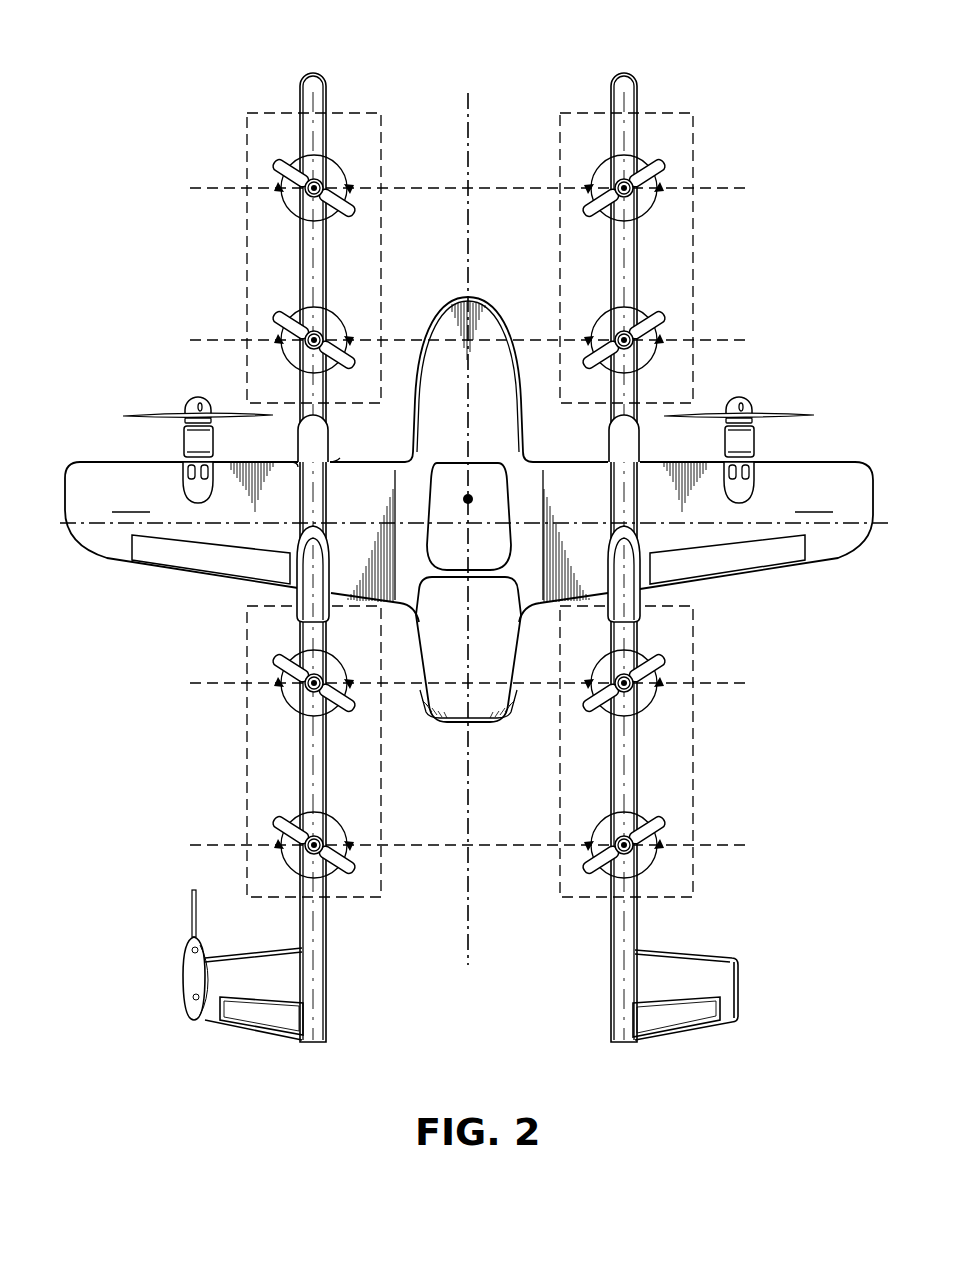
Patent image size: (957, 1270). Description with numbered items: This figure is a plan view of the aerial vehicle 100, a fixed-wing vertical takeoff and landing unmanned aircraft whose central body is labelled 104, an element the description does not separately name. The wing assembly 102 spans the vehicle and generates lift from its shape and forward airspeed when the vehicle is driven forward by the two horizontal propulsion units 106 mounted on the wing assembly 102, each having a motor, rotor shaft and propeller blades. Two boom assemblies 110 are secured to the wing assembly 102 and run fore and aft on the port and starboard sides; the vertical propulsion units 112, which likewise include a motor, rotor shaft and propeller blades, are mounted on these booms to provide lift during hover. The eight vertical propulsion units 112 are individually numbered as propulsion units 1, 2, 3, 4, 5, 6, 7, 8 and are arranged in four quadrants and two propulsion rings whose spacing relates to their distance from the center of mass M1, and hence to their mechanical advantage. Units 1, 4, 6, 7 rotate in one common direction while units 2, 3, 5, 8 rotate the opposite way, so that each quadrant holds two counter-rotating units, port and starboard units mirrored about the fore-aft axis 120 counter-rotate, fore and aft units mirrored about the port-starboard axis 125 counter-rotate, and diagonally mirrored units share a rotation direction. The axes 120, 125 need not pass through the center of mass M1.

The aerial vehicle 100 is at (155, 47).
The wing assembly 102 is at (469, 540).
The fuselage 104 is at (436, 290).
The horizontal propulsion unit 106 is at (182, 388).
The boom assembly 110 is at (312, 98).
The vertical propulsion unit 112 is at (428, 504).
The fore-aft axis 120 is at (471, 252).
The port-starboard axis 125 is at (103, 522).
The center of mass M1 is at (472, 503).
The propulsion unit 1 is at (624, 175).
The propulsion unit 2 is at (624, 329).
The propulsion unit 3 is at (314, 670).
The propulsion unit 4 is at (314, 832).
The propulsion unit 5 is at (314, 175).
The propulsion unit 6 is at (314, 329).
The propulsion unit 7 is at (624, 670).
The propulsion unit 8 is at (624, 832).